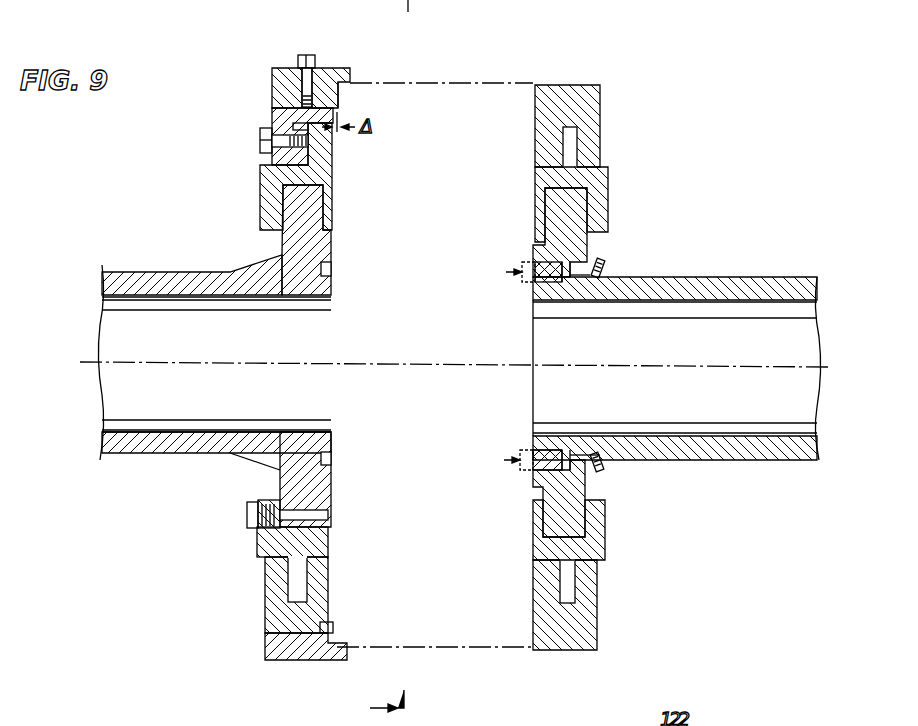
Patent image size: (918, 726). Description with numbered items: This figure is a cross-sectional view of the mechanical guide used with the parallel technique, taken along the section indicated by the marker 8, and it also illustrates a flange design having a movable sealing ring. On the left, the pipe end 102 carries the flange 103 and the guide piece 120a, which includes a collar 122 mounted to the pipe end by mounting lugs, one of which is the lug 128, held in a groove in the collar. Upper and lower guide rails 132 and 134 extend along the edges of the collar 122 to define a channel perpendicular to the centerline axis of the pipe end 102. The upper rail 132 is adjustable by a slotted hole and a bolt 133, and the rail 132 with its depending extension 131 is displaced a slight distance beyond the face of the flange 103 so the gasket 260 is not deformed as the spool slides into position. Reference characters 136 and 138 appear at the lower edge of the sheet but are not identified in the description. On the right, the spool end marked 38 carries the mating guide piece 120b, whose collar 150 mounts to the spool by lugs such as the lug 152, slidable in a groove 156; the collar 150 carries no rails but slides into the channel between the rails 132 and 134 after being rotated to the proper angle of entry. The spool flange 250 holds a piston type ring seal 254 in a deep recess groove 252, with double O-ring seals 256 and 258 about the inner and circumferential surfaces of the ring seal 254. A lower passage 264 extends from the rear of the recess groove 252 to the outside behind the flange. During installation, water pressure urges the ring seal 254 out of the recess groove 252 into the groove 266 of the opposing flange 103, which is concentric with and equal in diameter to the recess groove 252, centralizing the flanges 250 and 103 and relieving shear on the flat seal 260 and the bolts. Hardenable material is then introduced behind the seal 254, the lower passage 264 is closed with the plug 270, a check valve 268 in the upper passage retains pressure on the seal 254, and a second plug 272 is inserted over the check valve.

The section line indicator 8 is at (376, 704).
The shaft 38 is at (776, 277).
The pipe end 102 is at (184, 272).
The flange 103 is at (333, 250).
The guide piece 120a is at (236, 68).
The guide piece 120b is at (618, 178).
The collar 122 is at (272, 100).
The mounting lug 128 is at (258, 540).
The depending extension 131 is at (340, 98).
The upper guide rail 132 is at (338, 70).
The bolt 133 is at (303, 55).
The lower guide rail 134 is at (327, 663).
The ring 136 is at (548, 718).
The ring 138 is at (447, 717).
The collar 150 is at (593, 98).
The mounting lug 152 is at (605, 210).
The groove 156 is at (565, 135).
The flange 250 is at (536, 260).
The recess groove 252 is at (546, 470).
The ring seal 254 is at (530, 263).
The O-ring seal 256 is at (548, 450).
The O-ring seal 258 is at (558, 478).
The gasket 260 is at (530, 439).
The lower passage 264 is at (600, 455).
The groove 266 is at (332, 266).
The check valve 268 is at (588, 288).
The plug 270 is at (599, 468).
The second plug 272 is at (601, 264).